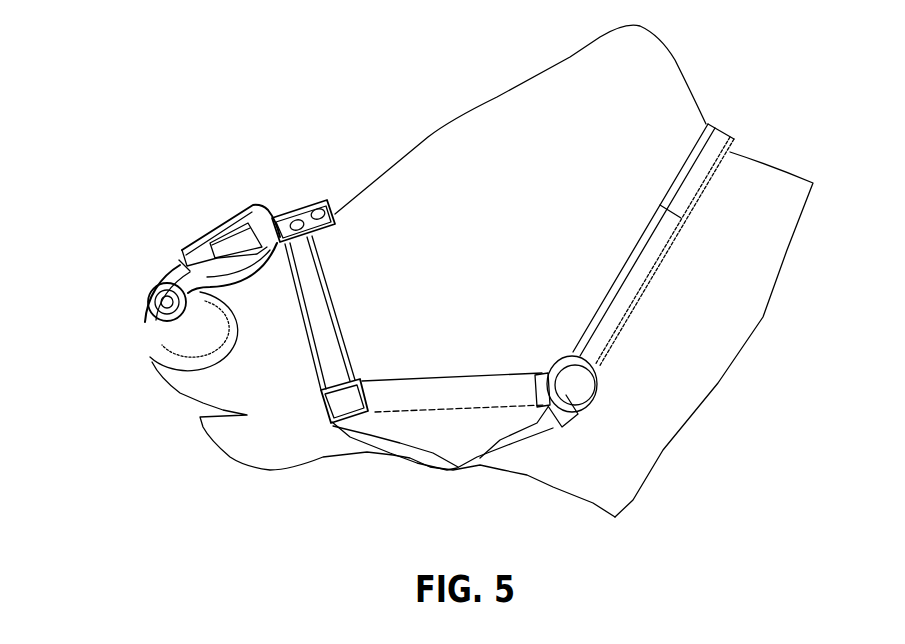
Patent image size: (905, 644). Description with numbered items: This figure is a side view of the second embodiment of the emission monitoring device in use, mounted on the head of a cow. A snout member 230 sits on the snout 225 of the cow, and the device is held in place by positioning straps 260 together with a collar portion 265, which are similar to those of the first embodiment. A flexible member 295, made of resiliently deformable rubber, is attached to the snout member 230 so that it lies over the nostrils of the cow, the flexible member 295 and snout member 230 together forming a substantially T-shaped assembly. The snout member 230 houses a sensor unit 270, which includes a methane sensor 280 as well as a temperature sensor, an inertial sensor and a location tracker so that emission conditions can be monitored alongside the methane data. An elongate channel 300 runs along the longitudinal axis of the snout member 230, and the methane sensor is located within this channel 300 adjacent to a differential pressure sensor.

The snout 225 is at (268, 358).
The snout member 230 is at (302, 207).
The positioning straps 260 is at (502, 387).
The collar portion 265 is at (620, 320).
The sensor unit 270 is at (100, 255).
The methane sensor 280 is at (162, 302).
The flexible member 295 is at (185, 350).
The elongate channel 300 is at (217, 233).